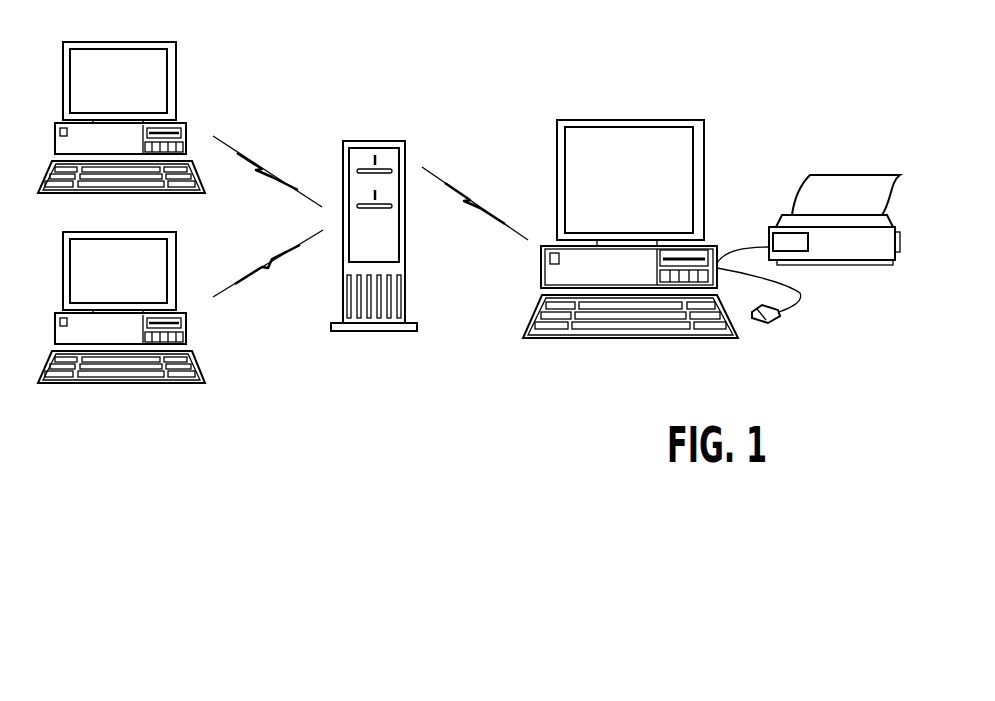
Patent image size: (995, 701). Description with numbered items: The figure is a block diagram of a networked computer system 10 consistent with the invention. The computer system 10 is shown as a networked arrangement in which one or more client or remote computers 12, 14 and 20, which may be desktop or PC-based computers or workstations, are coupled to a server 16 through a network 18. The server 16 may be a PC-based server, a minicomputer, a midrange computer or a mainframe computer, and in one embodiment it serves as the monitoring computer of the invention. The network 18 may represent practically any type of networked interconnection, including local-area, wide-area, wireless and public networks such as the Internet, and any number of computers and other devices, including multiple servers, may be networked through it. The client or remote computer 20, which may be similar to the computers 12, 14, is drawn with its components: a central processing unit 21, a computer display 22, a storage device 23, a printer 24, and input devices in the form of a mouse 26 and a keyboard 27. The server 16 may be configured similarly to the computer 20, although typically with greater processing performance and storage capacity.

The computer system 10 is at (503, 57).
The client or remote computer 12 is at (158, 43).
The client or remote computer 14 is at (158, 233).
The server 16 is at (365, 141).
The network 18 is at (240, 151).
The client or remote computer 20 is at (638, 222).
The central processing unit 21 is at (604, 279).
The computer display 22 is at (587, 120).
The storage device 23 is at (707, 272).
The printer 24 is at (838, 265).
The mouse 26 is at (780, 318).
The keyboard 27 is at (535, 338).